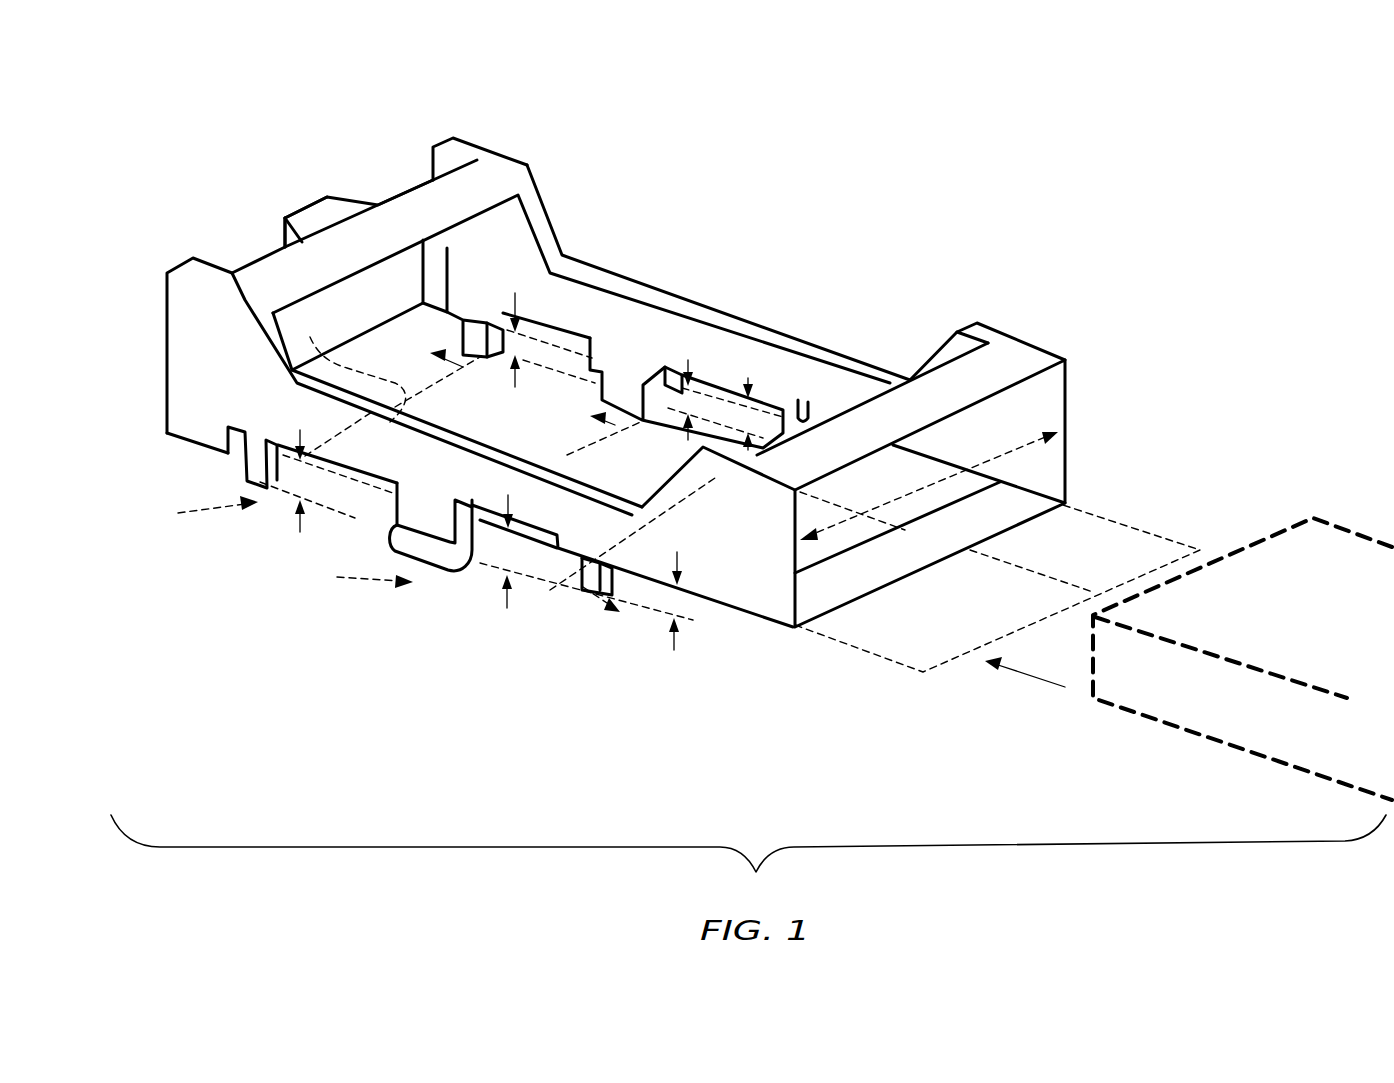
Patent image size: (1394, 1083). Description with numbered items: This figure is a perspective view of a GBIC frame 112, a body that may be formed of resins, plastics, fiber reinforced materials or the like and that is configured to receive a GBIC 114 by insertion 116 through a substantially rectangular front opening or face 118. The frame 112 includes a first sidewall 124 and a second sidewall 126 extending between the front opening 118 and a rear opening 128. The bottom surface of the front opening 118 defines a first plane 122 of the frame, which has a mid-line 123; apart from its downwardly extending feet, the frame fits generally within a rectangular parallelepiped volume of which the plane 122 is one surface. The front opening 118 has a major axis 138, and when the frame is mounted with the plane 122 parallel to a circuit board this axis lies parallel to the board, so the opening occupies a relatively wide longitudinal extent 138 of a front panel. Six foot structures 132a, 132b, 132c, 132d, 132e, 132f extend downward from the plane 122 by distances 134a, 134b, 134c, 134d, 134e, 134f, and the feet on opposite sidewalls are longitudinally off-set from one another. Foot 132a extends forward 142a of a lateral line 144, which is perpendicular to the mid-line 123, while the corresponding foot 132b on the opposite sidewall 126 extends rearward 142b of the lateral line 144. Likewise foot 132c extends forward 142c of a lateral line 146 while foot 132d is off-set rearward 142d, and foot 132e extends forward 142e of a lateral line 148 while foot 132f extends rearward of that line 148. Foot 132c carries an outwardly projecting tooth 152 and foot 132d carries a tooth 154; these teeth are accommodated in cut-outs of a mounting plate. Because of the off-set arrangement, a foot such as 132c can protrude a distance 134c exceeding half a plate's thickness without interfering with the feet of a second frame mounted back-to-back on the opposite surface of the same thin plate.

The GBIC frame 112 is at (552, 134).
The GBIC 114 is at (1272, 530).
The insertion 116 is at (1033, 678).
The front opening 118 is at (1057, 405).
The first plane 122 is at (857, 650).
The mid-line 123 is at (1063, 573).
The first sidewall 124 is at (190, 326).
The second sidewall 126 is at (555, 215).
The rear opening 128 is at (349, 340).
The foot structure 132a is at (240, 465).
The foot structure 132b is at (476, 335).
The foot structure 132c is at (392, 503).
The foot structure 132d is at (623, 393).
The foot structure 132e is at (585, 590).
The foot structure 132f is at (787, 417).
The downward distance 134a is at (300, 535).
The downward distance 134b is at (515, 387).
The downward distance 134c is at (507, 610).
The downward distance 134d is at (688, 438).
The downward distance 134e is at (675, 650).
The downward distance 134f is at (747, 380).
The major axis 138 is at (1018, 447).
The forward direction 142a is at (238, 497).
The rearward direction 142b is at (463, 367).
The forward direction 142c is at (383, 577).
The rearward direction 142d is at (615, 425).
The forward direction 142e is at (590, 603).
The lateral line 144 is at (386, 366).
The lateral line 146 is at (567, 455).
The lateral line 148 is at (677, 508).
The tooth 152 is at (440, 550).
The tooth 154 is at (670, 397).